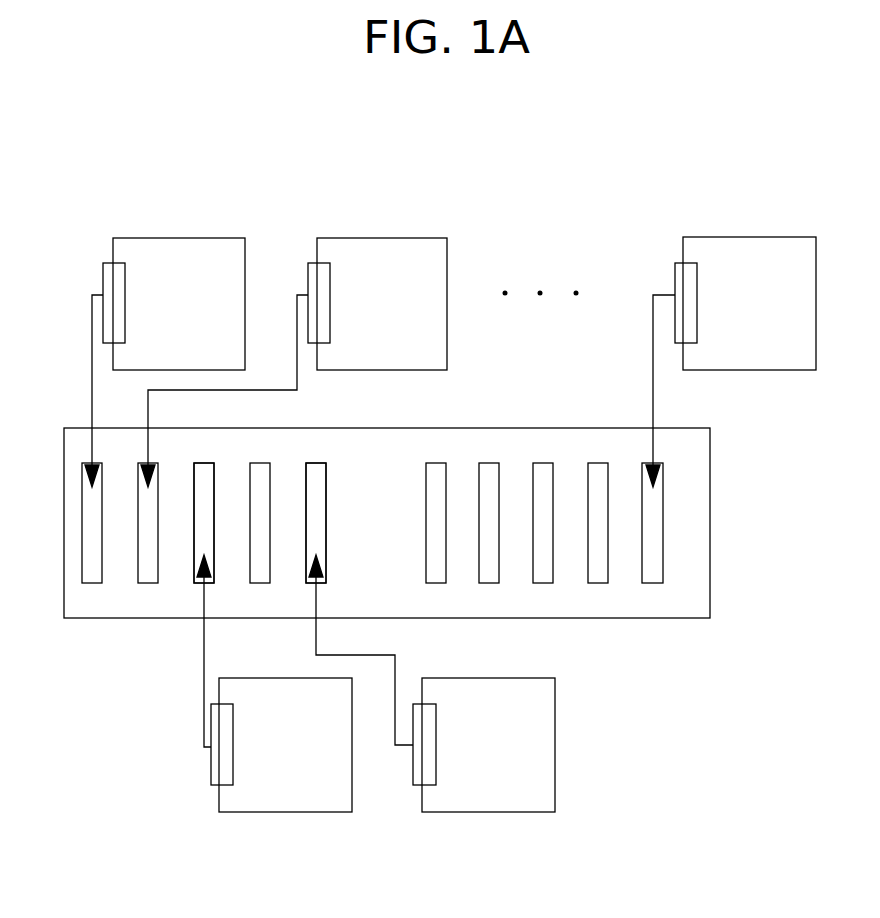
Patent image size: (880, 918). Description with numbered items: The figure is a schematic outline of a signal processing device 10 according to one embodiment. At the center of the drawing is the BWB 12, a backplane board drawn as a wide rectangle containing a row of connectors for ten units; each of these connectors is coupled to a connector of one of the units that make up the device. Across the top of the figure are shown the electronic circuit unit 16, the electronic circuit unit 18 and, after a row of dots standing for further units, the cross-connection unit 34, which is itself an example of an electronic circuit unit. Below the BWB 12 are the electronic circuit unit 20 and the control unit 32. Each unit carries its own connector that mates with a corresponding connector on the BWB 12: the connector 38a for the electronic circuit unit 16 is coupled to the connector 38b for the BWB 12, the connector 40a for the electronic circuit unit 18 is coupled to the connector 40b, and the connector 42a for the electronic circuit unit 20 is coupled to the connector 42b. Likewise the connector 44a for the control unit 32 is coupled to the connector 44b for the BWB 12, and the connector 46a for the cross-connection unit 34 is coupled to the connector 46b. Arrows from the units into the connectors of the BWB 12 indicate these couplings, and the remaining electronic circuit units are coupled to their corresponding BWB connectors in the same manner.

The signal processing device 10 is at (787, 143).
The BWB 12 is at (697, 528).
The electronic circuit unit 16 is at (180, 238).
The electronic circuit unit 18 is at (385, 238).
The cross-connection unit 34 is at (755, 237).
The electronic circuit unit 20 is at (283, 812).
The control unit 32 is at (493, 812).
The connector 38a is at (100, 330).
The connector 38b is at (92, 583).
The connector 40a is at (305, 330).
The connector 40b is at (148, 583).
The connector 42a is at (211, 762).
The connector 42b is at (206, 583).
The connector 44a is at (413, 762).
The connector 44b is at (312, 583).
The connector 46a is at (673, 330).
The connector 46b is at (653, 584).